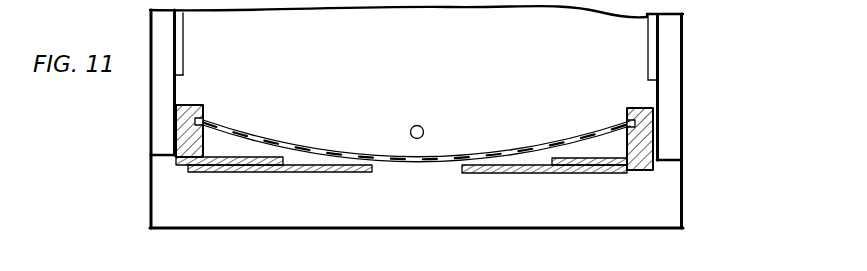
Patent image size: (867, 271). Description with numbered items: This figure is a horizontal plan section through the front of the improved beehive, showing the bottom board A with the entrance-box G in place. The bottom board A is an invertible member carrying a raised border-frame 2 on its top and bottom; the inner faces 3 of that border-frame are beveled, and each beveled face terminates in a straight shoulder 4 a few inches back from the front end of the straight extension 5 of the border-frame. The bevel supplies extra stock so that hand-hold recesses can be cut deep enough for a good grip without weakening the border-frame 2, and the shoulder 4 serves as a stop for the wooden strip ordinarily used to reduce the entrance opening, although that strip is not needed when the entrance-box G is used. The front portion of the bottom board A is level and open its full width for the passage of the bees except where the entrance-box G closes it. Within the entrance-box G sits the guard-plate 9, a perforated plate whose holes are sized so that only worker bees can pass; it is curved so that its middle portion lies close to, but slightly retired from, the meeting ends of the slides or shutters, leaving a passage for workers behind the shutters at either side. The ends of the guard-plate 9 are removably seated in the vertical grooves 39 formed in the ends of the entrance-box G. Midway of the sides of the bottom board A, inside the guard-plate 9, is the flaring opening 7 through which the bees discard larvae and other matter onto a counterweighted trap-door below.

The bottom board A is at (683, 78).
The border-frame 2 is at (157, 87).
The inner faces of the border-frame 3 is at (180, 53).
The straight shoulder 4 is at (176, 77).
The straight extension of the border-frame 5 is at (157, 128).
The flaring opening 7 is at (424, 131).
The guard-plate 9 is at (310, 143).
The vertical grooves 39 is at (200, 118).
The entrance-box G is at (652, 143).